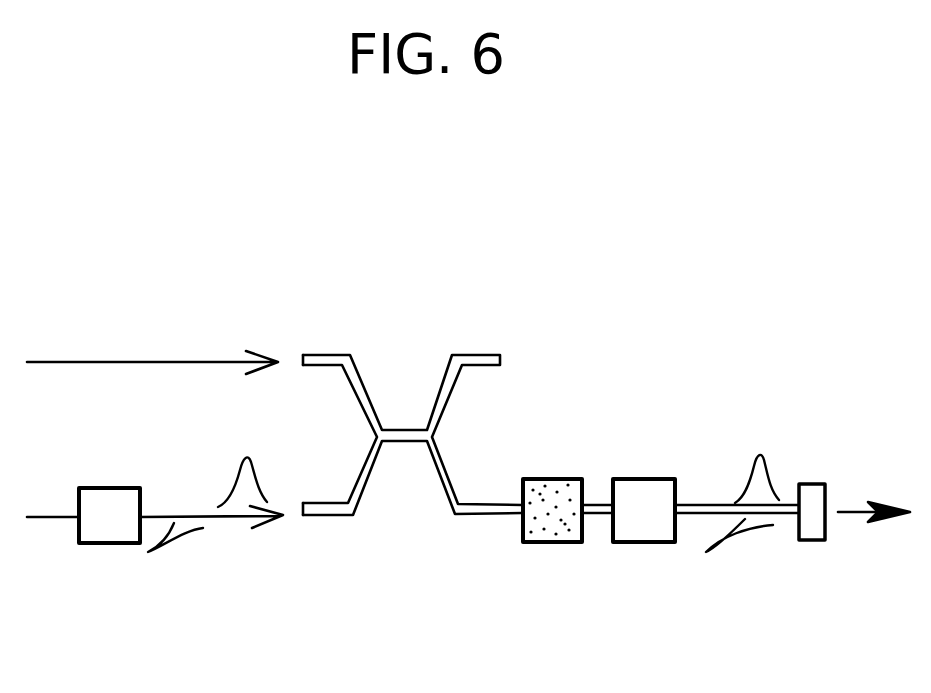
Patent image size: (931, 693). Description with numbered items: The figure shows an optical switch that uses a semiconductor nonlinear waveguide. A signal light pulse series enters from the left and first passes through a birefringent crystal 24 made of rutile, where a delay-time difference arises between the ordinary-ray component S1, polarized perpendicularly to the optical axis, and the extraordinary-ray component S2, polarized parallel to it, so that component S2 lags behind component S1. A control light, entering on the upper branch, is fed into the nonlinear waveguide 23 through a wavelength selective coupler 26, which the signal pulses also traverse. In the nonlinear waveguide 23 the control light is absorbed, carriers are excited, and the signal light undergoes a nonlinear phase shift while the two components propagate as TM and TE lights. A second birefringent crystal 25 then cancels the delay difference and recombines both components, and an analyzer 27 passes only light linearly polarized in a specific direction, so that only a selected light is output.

The nonlinear waveguide 23 is at (562, 527).
The birefringent crystal 24 is at (117, 528).
The birefringent crystal 25 is at (650, 527).
The wavelength selective coupler 26 is at (405, 415).
The analyzer 27 is at (817, 530).
The S-1 component S1 is at (498, 453).
The S-2 component S2 is at (460, 561).